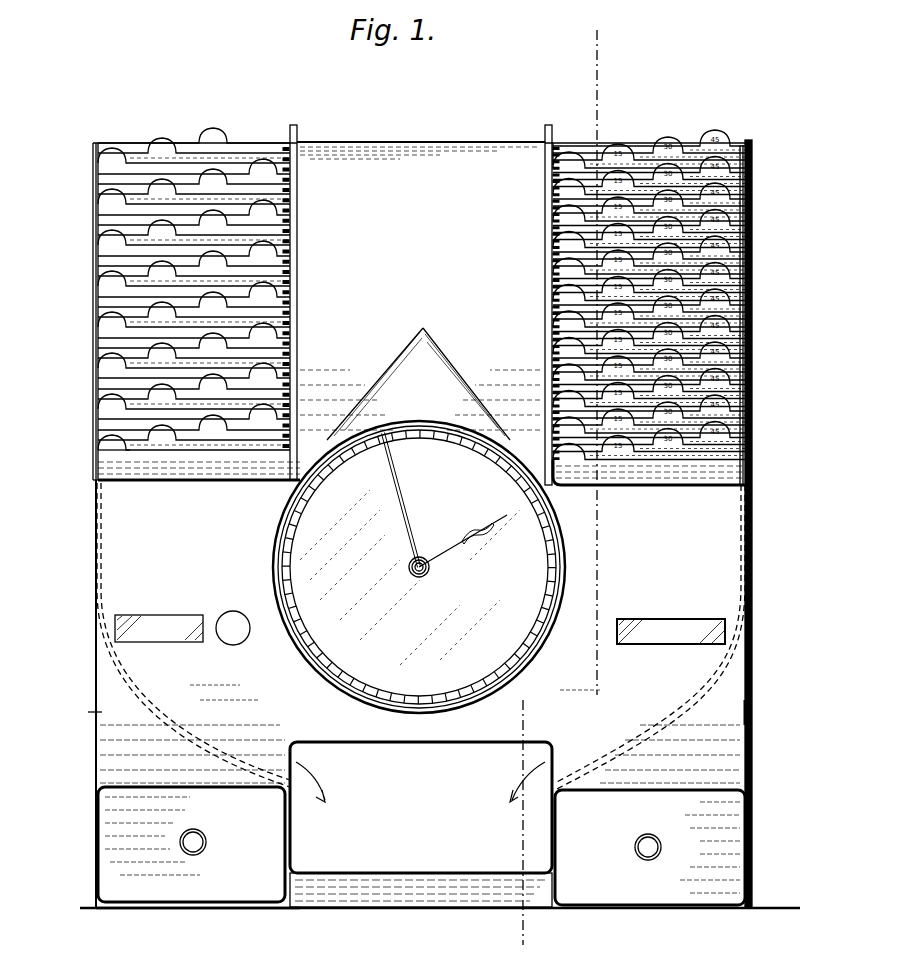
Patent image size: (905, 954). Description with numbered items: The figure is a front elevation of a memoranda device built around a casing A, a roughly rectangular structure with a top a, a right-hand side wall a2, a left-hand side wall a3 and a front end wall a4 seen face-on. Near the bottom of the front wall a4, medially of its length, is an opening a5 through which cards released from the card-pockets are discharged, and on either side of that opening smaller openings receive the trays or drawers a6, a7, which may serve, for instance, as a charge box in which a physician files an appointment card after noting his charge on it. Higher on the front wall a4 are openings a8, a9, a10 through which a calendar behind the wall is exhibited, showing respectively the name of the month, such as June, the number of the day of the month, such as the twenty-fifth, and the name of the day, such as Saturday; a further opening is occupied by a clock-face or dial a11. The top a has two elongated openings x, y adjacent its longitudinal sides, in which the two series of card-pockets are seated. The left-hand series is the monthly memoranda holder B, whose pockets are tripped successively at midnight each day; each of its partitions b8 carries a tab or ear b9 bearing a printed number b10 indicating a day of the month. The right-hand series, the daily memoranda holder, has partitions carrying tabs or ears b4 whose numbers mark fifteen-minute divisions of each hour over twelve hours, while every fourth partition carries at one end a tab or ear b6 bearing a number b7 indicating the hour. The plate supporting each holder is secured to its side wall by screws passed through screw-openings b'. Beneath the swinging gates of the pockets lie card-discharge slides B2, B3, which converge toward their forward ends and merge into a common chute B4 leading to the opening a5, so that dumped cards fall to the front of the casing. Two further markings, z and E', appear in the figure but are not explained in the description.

The casing A is at (440, 516).
The monthly memoranda holder B is at (100, 292).
The elongated opening x is at (737, 205).
The elongated opening y is at (100, 178).
The center line z is at (561, 476).
The top a is at (420, 346).
The right-hand side wall a2 is at (752, 712).
The left-hand side wall a3 is at (77, 713).
The front end wall a4 is at (420, 743).
The card-discharge opening a5 is at (421, 807).
The drawer a6 is at (342, 868).
The drawer a7 is at (650, 847).
The month opening a8 is at (146, 617).
The day-of-month opening a9 is at (233, 611).
The day-name opening a10 is at (677, 646).
The clock-face or dial a11 is at (419, 567).
The card-discharge slide B2 is at (742, 660).
The card-discharge slide B3 is at (100, 624).
The common chute B4 is at (420, 870).
The screw-opening b' is at (198, 920).
The tab or ear b4 is at (722, 253).
The hour tab or ear b6 is at (563, 158).
The hour number b7 is at (570, 464).
The partition b8 is at (222, 460).
The tab or ear b9 is at (100, 444).
The day-of-month number b10 is at (96, 480).
The hour stack guide E' is at (756, 315).